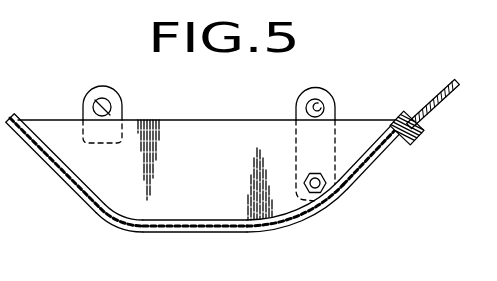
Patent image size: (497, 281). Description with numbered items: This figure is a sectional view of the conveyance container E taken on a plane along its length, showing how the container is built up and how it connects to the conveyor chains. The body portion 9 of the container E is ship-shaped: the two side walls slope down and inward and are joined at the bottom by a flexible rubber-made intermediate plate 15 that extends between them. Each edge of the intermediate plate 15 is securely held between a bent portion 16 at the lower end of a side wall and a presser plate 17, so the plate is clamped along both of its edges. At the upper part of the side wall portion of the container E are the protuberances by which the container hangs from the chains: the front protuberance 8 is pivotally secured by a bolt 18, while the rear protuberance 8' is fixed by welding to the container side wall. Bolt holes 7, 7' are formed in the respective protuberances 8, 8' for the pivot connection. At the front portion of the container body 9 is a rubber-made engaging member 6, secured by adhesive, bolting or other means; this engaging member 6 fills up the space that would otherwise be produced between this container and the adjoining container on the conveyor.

The engaging member 6 is at (440, 108).
The bolt hole 7 is at (330, 94).
The bolt hole 7' is at (86, 94).
The front protuberance 8 is at (296, 140).
The rear protuberance 8' is at (121, 110).
The body portion 9 is at (62, 181).
The intermediate plate 15 is at (112, 228).
The bent portion 16 is at (319, 215).
The presser plate 17 is at (198, 218).
The bolt 18 is at (324, 188).
The conveyance container E is at (377, 158).